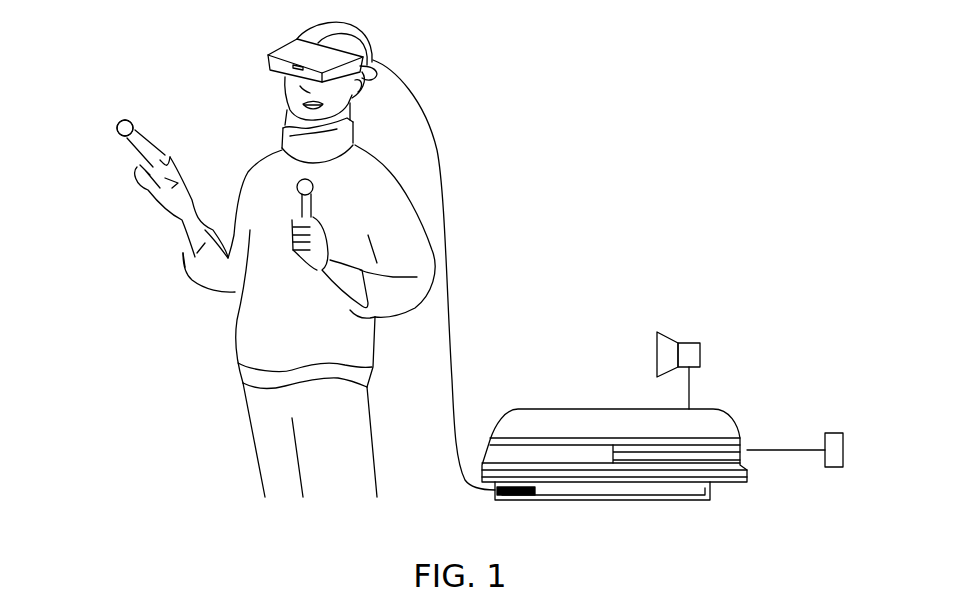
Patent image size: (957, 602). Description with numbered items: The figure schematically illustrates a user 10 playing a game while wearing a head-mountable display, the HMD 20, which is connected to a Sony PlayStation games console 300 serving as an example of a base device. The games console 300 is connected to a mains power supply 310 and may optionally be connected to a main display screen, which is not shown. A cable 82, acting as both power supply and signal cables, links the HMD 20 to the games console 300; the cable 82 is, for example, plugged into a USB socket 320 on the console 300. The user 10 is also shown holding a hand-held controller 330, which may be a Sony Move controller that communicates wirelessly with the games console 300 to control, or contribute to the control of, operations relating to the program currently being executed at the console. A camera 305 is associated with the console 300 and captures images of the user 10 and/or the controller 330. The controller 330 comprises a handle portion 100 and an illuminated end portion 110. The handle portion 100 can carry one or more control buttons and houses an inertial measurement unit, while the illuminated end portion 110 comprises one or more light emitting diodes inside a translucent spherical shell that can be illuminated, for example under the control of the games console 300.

The user 10 is at (242, 166).
The head-mountable display 20 is at (373, 58).
The cable 82 is at (453, 312).
The handle portion 100 is at (132, 158).
The illuminated end portion 110 is at (122, 134).
The hand-held controller 330 is at (120, 122).
The games console 300 is at (623, 407).
The camera 305 is at (687, 342).
The mains power supply 310 is at (835, 432).
The USB socket 320 is at (522, 498).